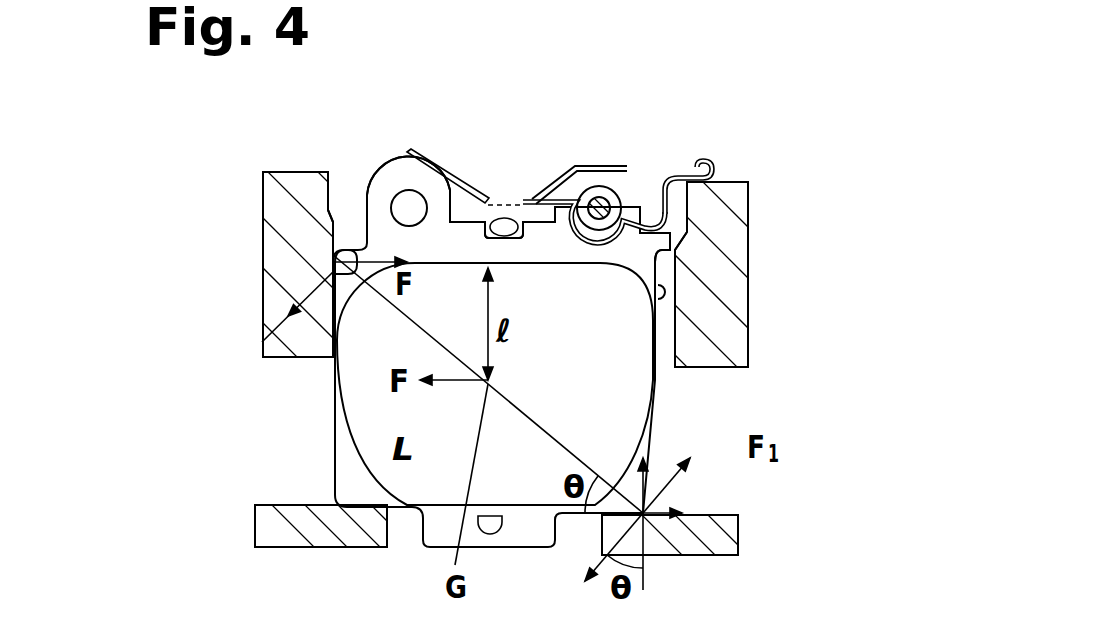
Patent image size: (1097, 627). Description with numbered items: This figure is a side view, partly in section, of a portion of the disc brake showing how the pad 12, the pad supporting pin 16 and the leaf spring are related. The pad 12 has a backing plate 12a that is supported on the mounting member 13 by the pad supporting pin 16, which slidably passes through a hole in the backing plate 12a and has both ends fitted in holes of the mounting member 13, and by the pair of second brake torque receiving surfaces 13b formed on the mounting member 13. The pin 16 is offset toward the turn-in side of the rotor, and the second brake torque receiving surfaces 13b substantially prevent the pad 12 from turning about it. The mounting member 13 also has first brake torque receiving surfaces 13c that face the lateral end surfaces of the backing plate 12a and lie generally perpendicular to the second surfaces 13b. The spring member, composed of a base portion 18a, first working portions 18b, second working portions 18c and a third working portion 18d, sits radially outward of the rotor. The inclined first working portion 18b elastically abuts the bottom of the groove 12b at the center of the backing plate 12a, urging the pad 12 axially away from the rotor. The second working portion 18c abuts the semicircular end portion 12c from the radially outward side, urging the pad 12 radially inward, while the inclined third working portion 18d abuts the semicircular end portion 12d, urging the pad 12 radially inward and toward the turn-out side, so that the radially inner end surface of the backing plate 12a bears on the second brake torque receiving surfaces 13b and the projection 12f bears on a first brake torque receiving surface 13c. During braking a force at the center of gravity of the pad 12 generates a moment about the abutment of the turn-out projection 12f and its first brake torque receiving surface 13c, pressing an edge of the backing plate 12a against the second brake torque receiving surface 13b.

The pad 12 is at (590, 432).
The backing plate 12a is at (455, 243).
The groove 12b is at (505, 220).
The semicircular end portion 12c is at (648, 192).
The semicircular end portion 12d is at (385, 187).
The projection 12f is at (338, 291).
The mounting member 13 is at (283, 255).
The second brake torque receiving surface 13b is at (303, 510).
The first brake torque receiving surface 13c is at (350, 190).
The pad supporting pin 16 is at (628, 206).
The base portion 18a is at (668, 214).
The first working portion 18b is at (542, 200).
The second working portion 18c is at (600, 170).
The third working portion 18d is at (432, 160).